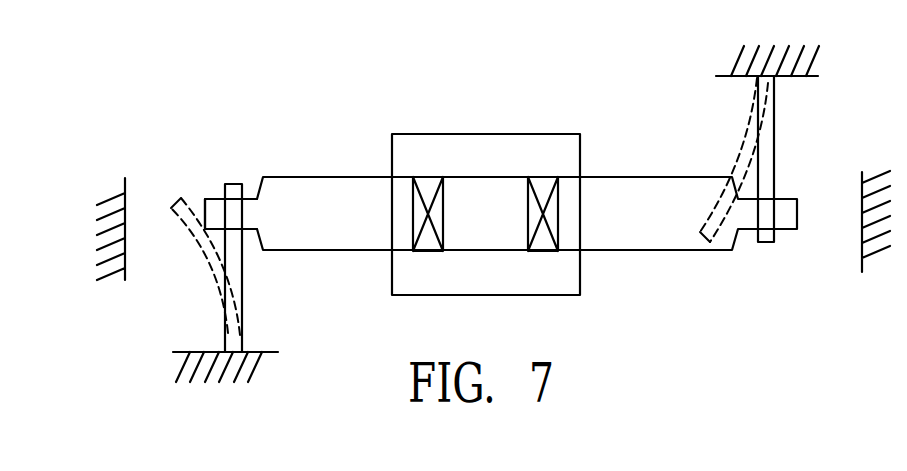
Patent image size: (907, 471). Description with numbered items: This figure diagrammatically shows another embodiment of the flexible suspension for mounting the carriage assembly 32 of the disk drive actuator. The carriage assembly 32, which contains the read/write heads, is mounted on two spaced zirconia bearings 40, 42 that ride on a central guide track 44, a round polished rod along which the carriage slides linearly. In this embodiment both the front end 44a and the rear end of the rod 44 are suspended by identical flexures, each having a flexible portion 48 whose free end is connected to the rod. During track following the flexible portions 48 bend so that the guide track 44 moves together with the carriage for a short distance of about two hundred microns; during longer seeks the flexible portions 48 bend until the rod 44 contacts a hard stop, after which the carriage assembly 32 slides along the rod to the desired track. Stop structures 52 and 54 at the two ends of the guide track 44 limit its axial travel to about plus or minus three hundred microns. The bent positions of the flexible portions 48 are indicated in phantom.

The carriage assembly 32 is at (408, 139).
The bearing 40 is at (543, 187).
The bearing 42 is at (427, 187).
The central guide track 44 is at (635, 235).
The front end of the central guide track 44a is at (215, 198).
The flexible portion 48 is at (192, 237).
The stop structure 52 is at (125, 232).
The stop structure 54 is at (862, 233).